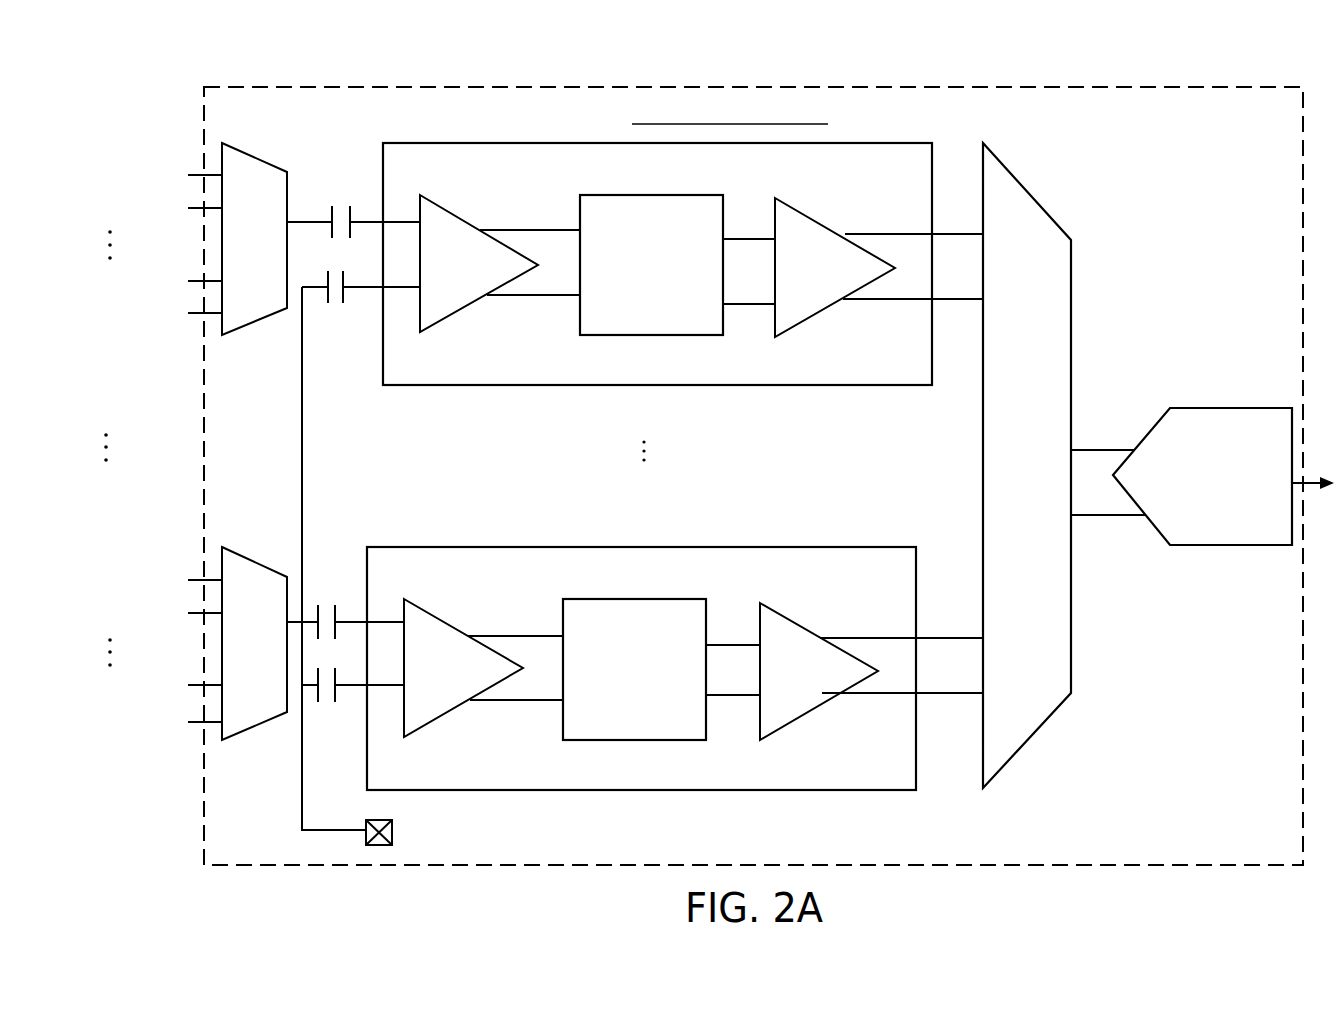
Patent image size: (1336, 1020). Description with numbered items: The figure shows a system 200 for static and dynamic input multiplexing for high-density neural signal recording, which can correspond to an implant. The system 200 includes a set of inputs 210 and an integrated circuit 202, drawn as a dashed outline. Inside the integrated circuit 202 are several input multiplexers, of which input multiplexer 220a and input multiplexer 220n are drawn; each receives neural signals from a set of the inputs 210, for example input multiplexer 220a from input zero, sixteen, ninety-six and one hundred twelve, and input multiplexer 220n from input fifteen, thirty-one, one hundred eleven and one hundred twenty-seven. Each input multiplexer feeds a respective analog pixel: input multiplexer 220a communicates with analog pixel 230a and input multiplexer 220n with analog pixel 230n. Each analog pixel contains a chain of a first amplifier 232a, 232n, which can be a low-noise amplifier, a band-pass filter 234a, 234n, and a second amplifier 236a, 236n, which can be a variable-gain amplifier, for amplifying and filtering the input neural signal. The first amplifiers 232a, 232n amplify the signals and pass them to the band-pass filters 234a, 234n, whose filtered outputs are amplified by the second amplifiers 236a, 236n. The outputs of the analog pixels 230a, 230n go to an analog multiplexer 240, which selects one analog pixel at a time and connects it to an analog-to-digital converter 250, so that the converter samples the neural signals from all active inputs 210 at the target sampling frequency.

The system 200 is at (845, 58).
The integrated circuit 202 is at (650, 87).
The inputs 210 is at (147, 100).
The input multiplexer 220a is at (255, 157).
The input multiplexer 220n is at (257, 562).
The analog pixel 230a is at (486, 386).
The analog pixel 230n is at (650, 547).
The first amplifier 232a is at (457, 215).
The first amplifier 232n is at (442, 620).
The band-pass filter 234a is at (580, 313).
The band-pass filter 234n is at (563, 723).
The second amplifier 236a is at (817, 222).
The second amplifier 236n is at (802, 627).
The analog multiplexer 240 is at (1072, 363).
The analog-to-digital converter 250 is at (1232, 407).